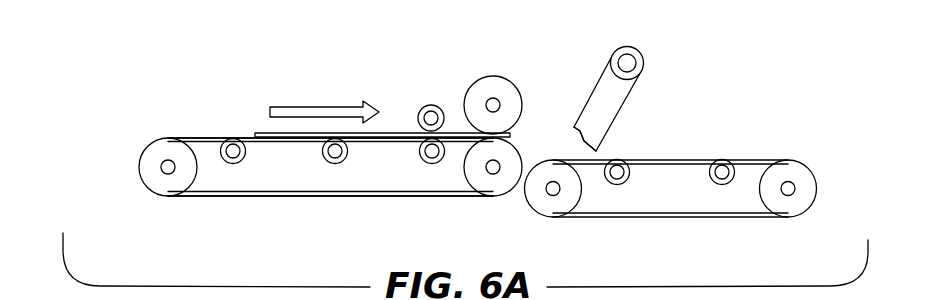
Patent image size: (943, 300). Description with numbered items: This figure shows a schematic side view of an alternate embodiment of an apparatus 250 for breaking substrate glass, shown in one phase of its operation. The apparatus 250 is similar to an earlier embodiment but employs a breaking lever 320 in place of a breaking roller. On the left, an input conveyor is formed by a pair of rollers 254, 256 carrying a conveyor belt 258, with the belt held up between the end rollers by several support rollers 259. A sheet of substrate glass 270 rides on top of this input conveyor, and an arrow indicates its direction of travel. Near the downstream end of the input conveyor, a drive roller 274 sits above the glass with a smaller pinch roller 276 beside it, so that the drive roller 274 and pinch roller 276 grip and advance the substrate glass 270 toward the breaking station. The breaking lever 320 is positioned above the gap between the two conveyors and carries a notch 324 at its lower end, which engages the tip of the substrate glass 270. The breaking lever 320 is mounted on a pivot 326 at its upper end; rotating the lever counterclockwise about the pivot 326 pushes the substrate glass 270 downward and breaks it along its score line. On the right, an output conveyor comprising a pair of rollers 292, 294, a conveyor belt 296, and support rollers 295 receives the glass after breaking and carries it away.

The apparatus 250 is at (112, 133).
The roller 254 is at (152, 177).
The roller 256 is at (480, 196).
The conveyor belt 258 is at (190, 138).
The support rollers 259 is at (235, 164).
The substrate glass 270 is at (384, 133).
The drive roller 274 is at (503, 78).
The pinch roller 276 is at (431, 105).
The roller 292 is at (553, 210).
The roller 294 is at (797, 173).
The support rollers 295 is at (617, 187).
The conveyor belt 296 is at (755, 160).
The breaking lever 320 is at (627, 98).
The notch 324 is at (575, 136).
The pivot 326 is at (630, 63).